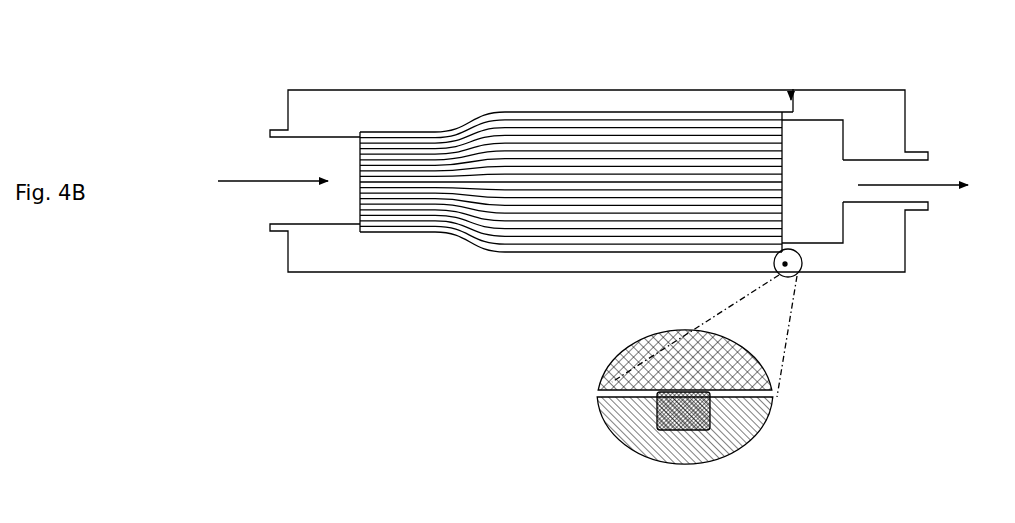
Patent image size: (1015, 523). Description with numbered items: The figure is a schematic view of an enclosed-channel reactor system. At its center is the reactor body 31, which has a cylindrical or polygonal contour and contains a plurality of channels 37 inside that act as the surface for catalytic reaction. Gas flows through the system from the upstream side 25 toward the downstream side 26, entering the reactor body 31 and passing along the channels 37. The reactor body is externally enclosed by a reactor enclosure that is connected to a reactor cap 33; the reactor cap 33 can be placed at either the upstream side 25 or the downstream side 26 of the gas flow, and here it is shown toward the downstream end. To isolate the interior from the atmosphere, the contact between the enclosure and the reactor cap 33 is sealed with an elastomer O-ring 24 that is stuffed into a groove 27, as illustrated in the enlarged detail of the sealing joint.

The elastomer O-ring 24 is at (363, 88).
The upstream side 25 is at (273, 164).
The downstream side 26 is at (930, 167).
The groove 27 is at (646, 424).
The reactor body 31 is at (513, 120).
The reactor cap 33 is at (848, 88).
The channels 37 is at (617, 135).